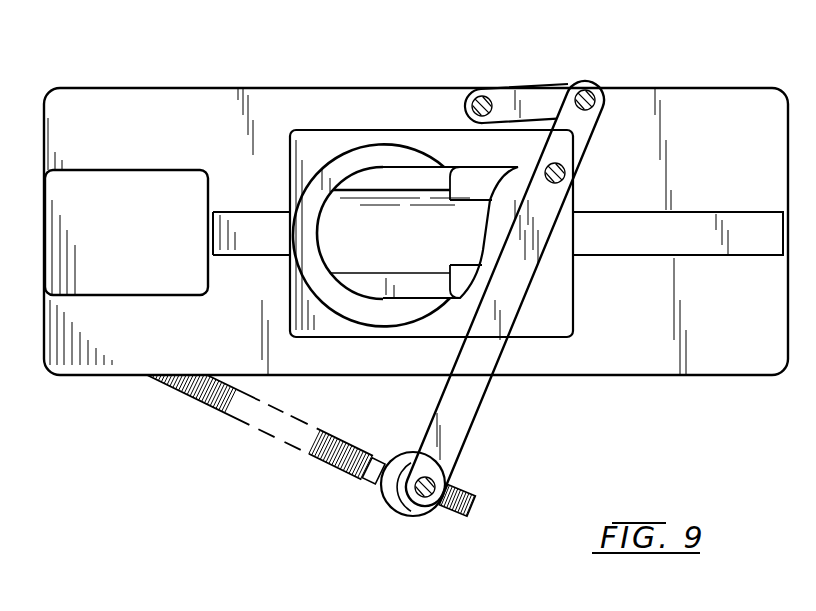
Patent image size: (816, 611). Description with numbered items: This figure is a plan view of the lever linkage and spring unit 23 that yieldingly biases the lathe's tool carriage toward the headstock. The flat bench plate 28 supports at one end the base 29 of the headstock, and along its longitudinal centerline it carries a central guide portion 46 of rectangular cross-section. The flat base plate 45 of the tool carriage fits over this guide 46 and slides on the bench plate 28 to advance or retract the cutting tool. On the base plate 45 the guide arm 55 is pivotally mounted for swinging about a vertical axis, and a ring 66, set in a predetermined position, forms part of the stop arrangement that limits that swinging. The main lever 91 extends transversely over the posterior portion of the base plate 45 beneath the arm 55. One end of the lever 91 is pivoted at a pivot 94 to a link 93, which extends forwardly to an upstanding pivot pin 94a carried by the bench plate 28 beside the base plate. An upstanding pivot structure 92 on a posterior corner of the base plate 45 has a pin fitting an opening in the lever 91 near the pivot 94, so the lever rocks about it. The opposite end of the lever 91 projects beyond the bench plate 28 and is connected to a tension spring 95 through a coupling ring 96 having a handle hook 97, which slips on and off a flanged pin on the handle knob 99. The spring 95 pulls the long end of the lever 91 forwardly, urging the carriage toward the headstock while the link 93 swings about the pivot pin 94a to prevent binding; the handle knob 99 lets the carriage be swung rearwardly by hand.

The bench plate 28 is at (740, 331).
The base 29 is at (139, 237).
The central guide portion 46 is at (686, 222).
The base plate 45 is at (560, 312).
The ring 66 is at (317, 275).
The guide arm 55 is at (468, 178).
The link 93 is at (528, 95).
The pivot pin 94a is at (482, 97).
The pivot 94 is at (593, 95).
The pivot structure 92 is at (566, 173).
The main lever 91 is at (473, 403).
The lever linkage and spring unit 23 is at (477, 450).
The tension spring 95 is at (228, 418).
The coupling ring 96 is at (392, 492).
The handle hook 97 is at (473, 507).
The handle knob 99 is at (424, 508).